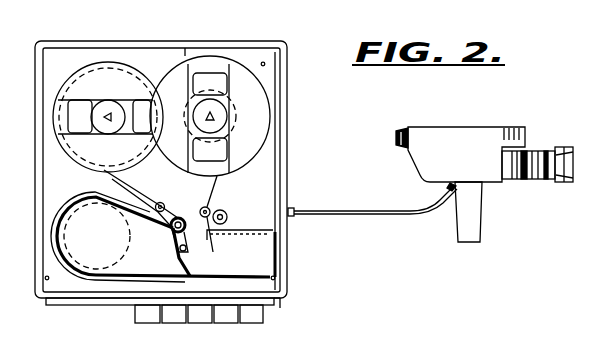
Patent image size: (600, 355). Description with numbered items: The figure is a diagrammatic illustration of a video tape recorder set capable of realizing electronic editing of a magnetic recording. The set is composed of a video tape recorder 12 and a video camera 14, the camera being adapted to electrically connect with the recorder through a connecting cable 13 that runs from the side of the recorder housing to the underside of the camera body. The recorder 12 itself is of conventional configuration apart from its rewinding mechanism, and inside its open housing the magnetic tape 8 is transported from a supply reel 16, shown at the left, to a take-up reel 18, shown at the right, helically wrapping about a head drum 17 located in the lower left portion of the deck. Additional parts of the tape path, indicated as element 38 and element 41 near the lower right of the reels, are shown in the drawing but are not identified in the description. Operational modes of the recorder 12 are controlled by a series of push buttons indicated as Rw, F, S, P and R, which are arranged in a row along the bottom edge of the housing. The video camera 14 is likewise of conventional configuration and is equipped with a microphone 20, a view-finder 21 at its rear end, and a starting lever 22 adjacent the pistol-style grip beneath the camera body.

The video tape recorder 12 is at (186, 41).
The supply reel 16 is at (53, 111).
The take-up reel 18 is at (258, 116).
The head drum 17 is at (70, 238).
The lever arm 41 is at (185, 230).
The magnetic tape 8 is at (217, 201).
The roller 38 is at (228, 216).
The connecting cable 13 is at (371, 217).
The video camera 14 is at (461, 127).
The microphone 20 is at (524, 127).
The view-finder 21 is at (395, 138).
The starting lever 22 is at (488, 186).
The push button Rw is at (146, 325).
The push button F is at (176, 325).
The push button S is at (200, 325).
The push button P is at (226, 325).
The push button R is at (262, 323).